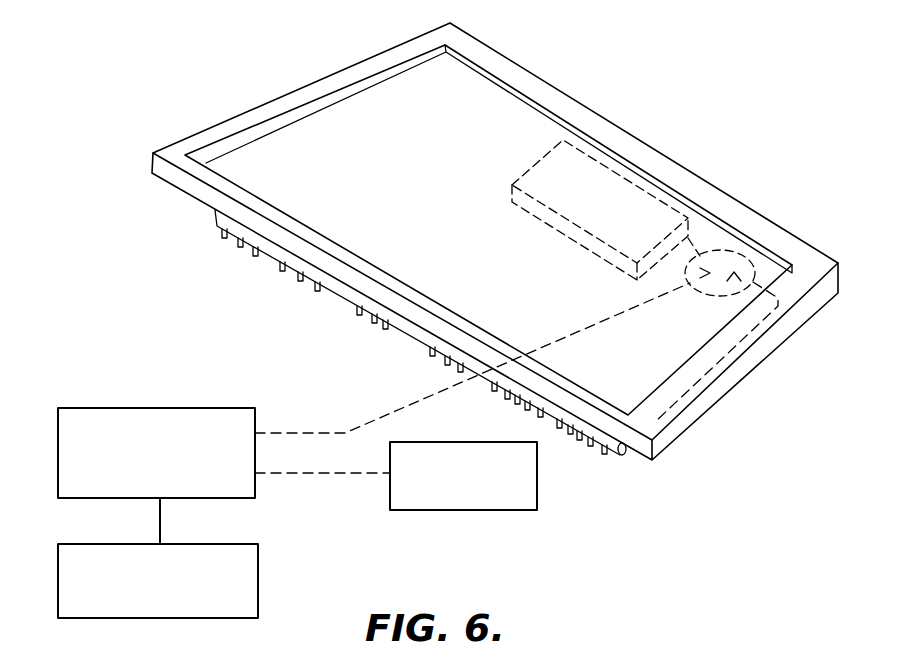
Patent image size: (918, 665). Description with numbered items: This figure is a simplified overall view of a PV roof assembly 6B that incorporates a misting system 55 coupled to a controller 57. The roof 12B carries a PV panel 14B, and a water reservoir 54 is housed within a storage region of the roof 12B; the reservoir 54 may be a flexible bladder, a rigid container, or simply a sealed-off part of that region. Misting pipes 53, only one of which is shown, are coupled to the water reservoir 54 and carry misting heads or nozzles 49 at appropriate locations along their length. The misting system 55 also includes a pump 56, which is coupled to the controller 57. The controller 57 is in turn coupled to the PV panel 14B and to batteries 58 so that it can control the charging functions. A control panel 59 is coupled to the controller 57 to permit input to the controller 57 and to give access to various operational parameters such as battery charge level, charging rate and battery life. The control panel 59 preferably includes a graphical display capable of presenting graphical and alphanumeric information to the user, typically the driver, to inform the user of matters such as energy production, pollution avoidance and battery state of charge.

The PV roof assembly 6B is at (652, 65).
The roof 12B is at (678, 436).
The PV panel 14B is at (452, 75).
The misting heads or nozzles 49 is at (443, 364).
The misting pipes 53 is at (338, 288).
The water reservoir 54 is at (652, 211).
The misting system 55 is at (72, 298).
The pump 56 is at (742, 246).
The controller 57 is at (218, 407).
The batteries 58 is at (538, 487).
The control panel 59 is at (250, 543).